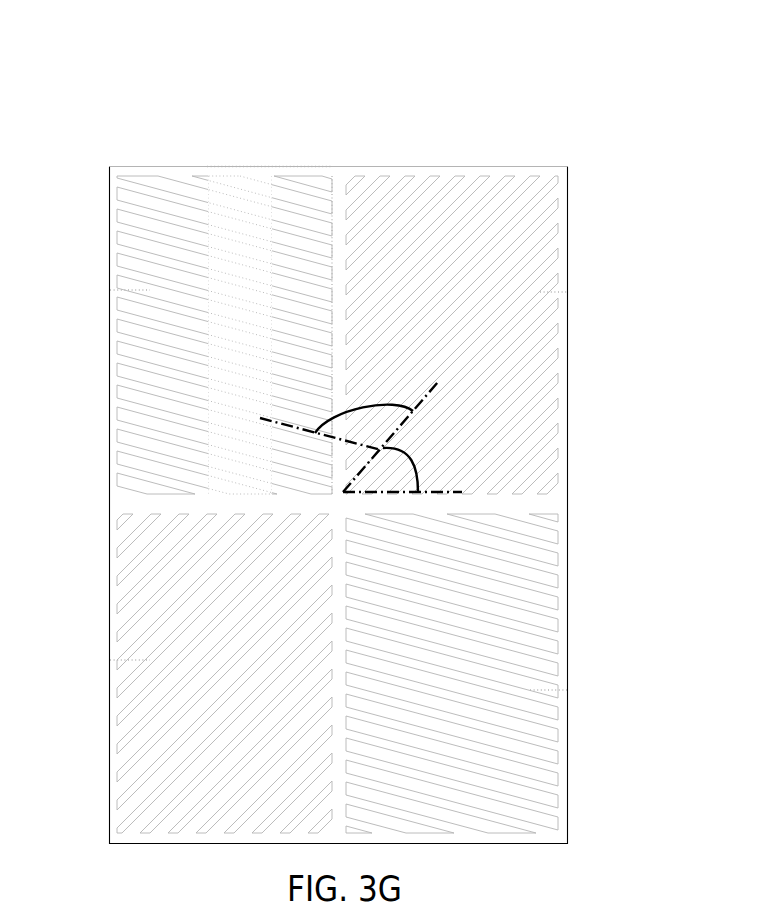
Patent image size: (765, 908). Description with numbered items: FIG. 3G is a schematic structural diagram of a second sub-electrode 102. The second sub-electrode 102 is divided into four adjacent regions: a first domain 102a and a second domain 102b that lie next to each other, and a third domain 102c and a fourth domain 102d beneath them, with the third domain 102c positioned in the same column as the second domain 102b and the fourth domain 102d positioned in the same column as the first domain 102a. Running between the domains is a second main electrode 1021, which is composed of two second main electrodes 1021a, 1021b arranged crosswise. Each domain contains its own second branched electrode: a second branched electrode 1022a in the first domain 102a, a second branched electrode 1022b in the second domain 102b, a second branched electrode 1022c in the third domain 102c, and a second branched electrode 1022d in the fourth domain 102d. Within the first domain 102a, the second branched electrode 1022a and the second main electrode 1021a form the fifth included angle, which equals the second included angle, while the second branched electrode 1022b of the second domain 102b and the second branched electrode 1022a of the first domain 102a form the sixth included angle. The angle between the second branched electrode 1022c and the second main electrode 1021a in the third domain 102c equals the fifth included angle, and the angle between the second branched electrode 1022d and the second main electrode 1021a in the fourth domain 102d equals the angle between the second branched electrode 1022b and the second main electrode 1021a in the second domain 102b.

The second sub-electrode 102 is at (98, 35).
The second main electrode 1021 is at (334, 120).
The second main electrode 1021a is at (262, 496).
The second main electrode 1021b is at (345, 198).
The first domain 102a is at (567, 217).
The second domain 102b is at (110, 208).
The third domain 102c is at (110, 575).
The fourth domain 102d is at (567, 583).
The second branched electrode 1022a is at (547, 288).
The second branched electrode 1022b is at (142, 296).
The second branched electrode 1022c is at (143, 663).
The second branched electrode 1022d is at (535, 688).